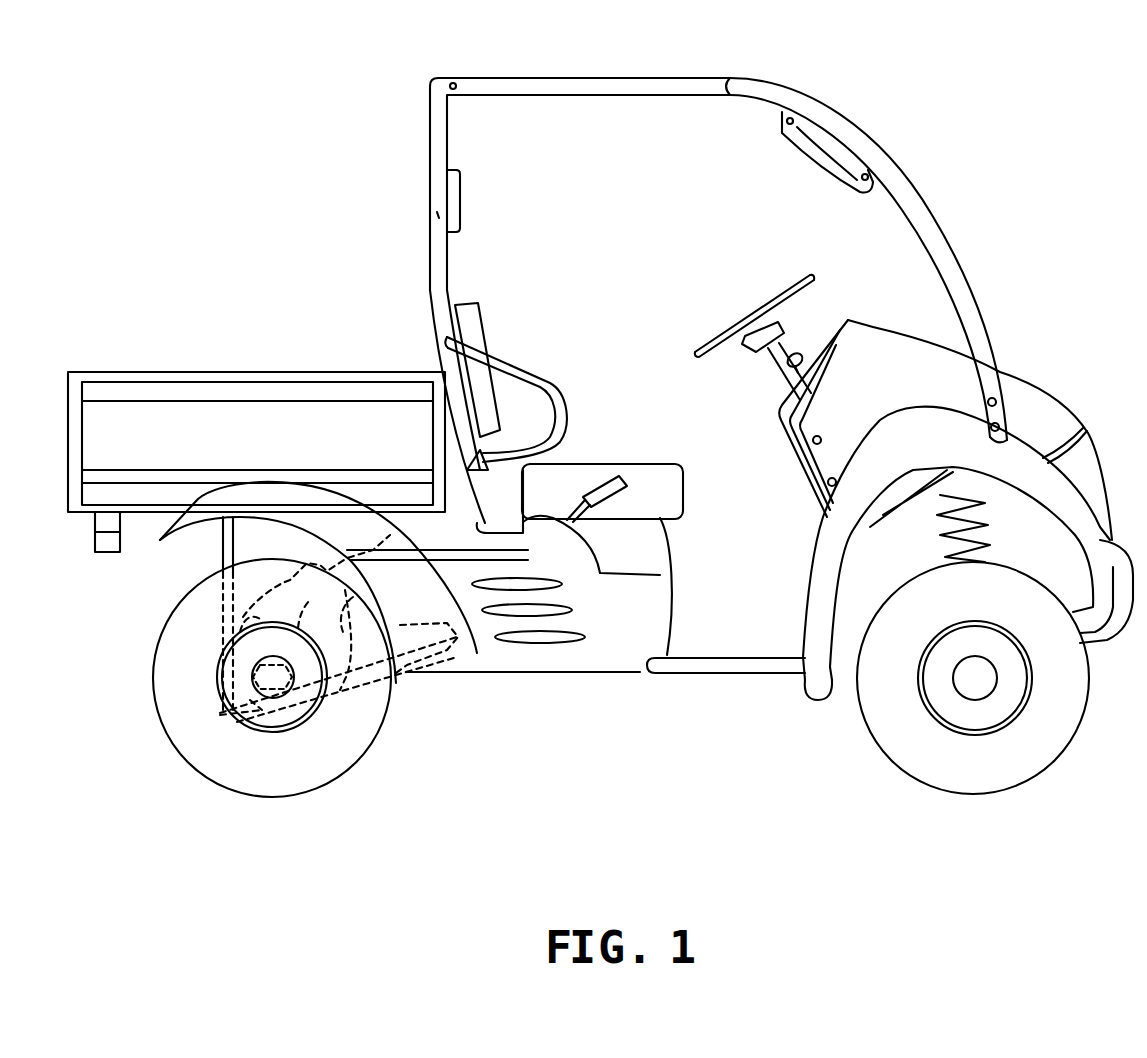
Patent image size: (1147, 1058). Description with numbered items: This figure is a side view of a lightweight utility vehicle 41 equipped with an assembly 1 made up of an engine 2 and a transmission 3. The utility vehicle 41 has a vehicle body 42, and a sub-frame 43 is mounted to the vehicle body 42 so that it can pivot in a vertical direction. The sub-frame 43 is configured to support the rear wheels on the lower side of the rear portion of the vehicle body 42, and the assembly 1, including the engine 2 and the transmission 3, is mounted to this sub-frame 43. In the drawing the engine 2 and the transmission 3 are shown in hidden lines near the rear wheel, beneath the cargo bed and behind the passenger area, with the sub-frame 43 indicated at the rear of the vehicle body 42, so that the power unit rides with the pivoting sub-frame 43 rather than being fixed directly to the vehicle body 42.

The assembly 1 is at (339, 703).
The engine 2 is at (373, 717).
The transmission 3 is at (320, 717).
The utility vehicle 41 is at (602, 459).
The vehicle body 42 is at (558, 553).
The sub-frame 43 is at (220, 543).